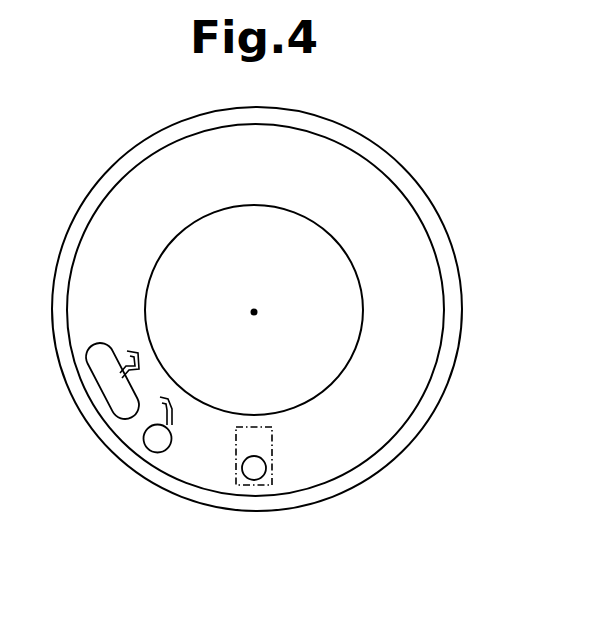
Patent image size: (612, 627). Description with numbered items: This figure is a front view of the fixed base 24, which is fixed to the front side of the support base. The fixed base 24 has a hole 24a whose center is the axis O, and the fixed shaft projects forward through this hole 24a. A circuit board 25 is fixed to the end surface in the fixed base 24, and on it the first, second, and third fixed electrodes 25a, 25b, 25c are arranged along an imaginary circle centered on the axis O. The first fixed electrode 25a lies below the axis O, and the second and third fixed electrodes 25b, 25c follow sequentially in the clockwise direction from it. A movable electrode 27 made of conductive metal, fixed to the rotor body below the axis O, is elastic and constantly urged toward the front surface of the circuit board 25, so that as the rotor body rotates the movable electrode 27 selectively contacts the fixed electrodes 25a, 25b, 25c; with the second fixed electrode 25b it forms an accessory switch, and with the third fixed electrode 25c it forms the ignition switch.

The fixed base 24 is at (446, 235).
The hole 24a is at (165, 250).
The circuit board 25 is at (428, 315).
The first fixed electrode 25a is at (266, 470).
The second fixed electrode 25b is at (160, 453).
The third fixed electrode 25c is at (112, 432).
The movable electrode 27 is at (272, 445).
The axis O is at (265, 310).